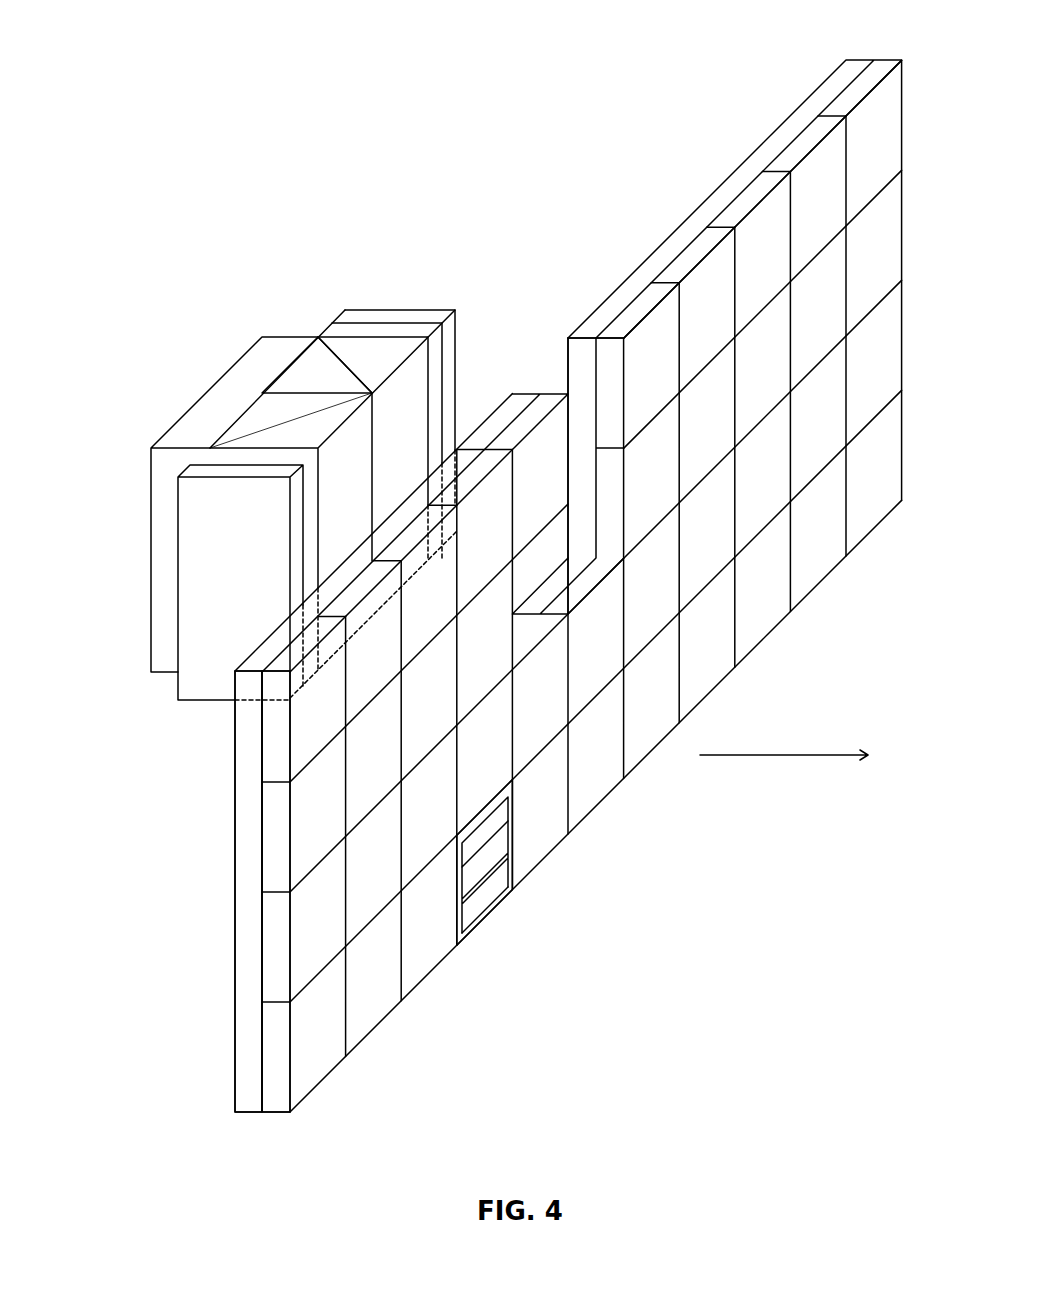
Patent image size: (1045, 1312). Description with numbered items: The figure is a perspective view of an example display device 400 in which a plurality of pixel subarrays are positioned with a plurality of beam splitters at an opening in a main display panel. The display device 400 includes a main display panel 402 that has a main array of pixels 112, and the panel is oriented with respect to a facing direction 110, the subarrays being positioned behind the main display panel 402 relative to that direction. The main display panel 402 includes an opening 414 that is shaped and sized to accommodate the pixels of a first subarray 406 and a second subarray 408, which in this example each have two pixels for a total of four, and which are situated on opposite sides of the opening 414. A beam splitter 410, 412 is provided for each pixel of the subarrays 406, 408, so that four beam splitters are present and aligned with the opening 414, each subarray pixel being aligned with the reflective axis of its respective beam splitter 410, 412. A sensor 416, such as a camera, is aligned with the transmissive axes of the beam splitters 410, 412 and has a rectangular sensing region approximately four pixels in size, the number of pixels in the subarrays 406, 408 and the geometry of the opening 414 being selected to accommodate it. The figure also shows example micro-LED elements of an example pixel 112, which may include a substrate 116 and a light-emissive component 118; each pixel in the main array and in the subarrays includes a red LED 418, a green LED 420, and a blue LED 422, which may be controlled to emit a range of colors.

The display device 400 is at (328, 114).
The main display panel 402 is at (670, 848).
The first subarray 406 is at (367, 308).
The second subarray 408 is at (198, 579).
The beam splitter 410 is at (306, 370).
The beam splitter 412 is at (258, 416).
The opening 414 is at (545, 382).
The sensor 416 is at (259, 374).
The red LED 418 is at (480, 903).
The green LED 420 is at (465, 888).
The blue LED 422 is at (505, 813).
The pixel 112 is at (500, 882).
The facing direction 110 is at (784, 766).
The substrate 116 is at (243, 934).
The light-emissive component 118 is at (277, 982).